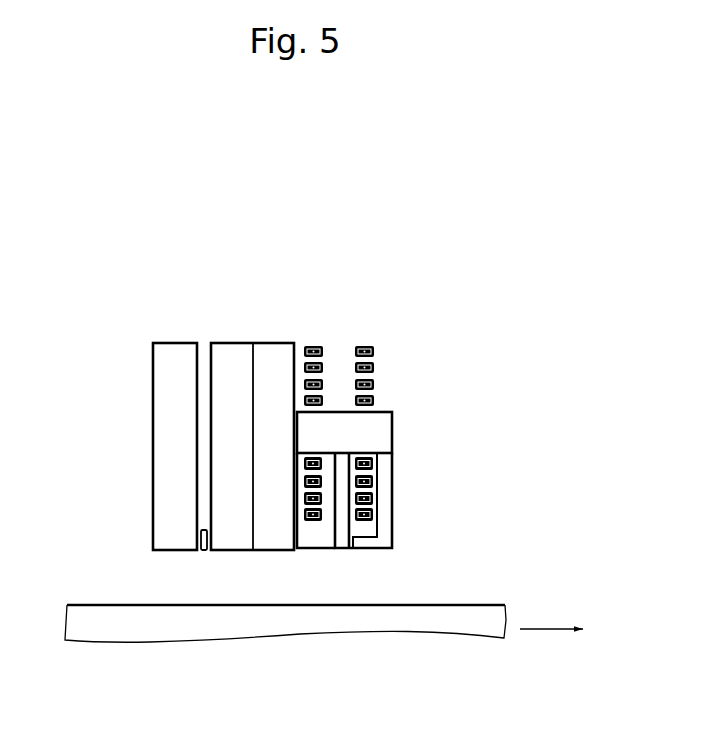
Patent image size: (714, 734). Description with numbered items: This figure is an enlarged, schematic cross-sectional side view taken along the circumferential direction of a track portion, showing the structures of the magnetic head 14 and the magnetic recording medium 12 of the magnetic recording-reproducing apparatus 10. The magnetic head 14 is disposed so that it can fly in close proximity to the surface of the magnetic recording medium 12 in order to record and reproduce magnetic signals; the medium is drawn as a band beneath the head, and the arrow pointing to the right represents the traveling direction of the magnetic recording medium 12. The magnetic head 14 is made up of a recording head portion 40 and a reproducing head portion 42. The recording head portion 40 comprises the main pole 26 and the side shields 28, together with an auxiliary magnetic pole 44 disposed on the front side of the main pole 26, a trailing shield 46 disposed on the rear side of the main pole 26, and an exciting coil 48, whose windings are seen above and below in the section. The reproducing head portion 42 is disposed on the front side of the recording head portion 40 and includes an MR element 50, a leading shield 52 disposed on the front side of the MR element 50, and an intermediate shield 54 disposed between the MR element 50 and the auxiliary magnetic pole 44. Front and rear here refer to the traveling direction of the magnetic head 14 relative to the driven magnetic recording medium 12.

The magnetic recording-reproducing apparatus 10 is at (285, 233).
The magnetic recording medium 12 is at (453, 605).
The magnetic head 14 is at (123, 435).
The main pole 26 is at (339, 550).
The side shields 28 is at (330, 549).
The recording head portion 40 is at (338, 332).
The reproducing head portion 42 is at (208, 332).
The auxiliary magnetic pole 44 is at (277, 552).
The trailing shield 46 is at (393, 531).
The exciting coil 48 is at (373, 367).
The MR element 50 is at (202, 552).
The leading shield 52 is at (163, 552).
The intermediate shield 54 is at (228, 552).